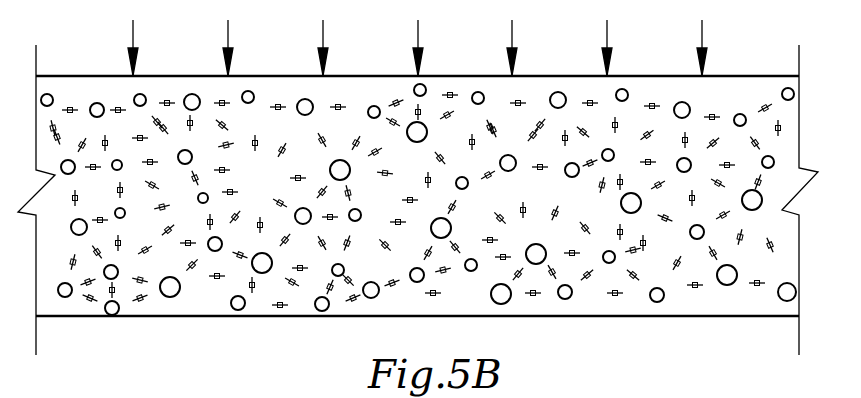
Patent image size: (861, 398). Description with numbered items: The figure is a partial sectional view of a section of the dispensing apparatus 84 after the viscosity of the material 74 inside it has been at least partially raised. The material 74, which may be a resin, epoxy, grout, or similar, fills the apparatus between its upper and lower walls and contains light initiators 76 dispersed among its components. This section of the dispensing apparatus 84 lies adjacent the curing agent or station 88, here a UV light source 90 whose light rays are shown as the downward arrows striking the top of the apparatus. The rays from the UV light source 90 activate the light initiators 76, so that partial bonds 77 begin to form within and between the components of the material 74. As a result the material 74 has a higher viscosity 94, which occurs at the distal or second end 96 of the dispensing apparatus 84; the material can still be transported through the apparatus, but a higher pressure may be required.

The material 74 is at (110, 85).
The light initiators 76 is at (278, 308).
The partial bonds 77 is at (543, 296).
The dispensing apparatus 84 is at (532, 76).
The curing agent 88 is at (418, 18).
The UV light source 90 is at (228, 27).
The higher viscosity 94 is at (717, 300).
The second end 96 is at (625, 76).